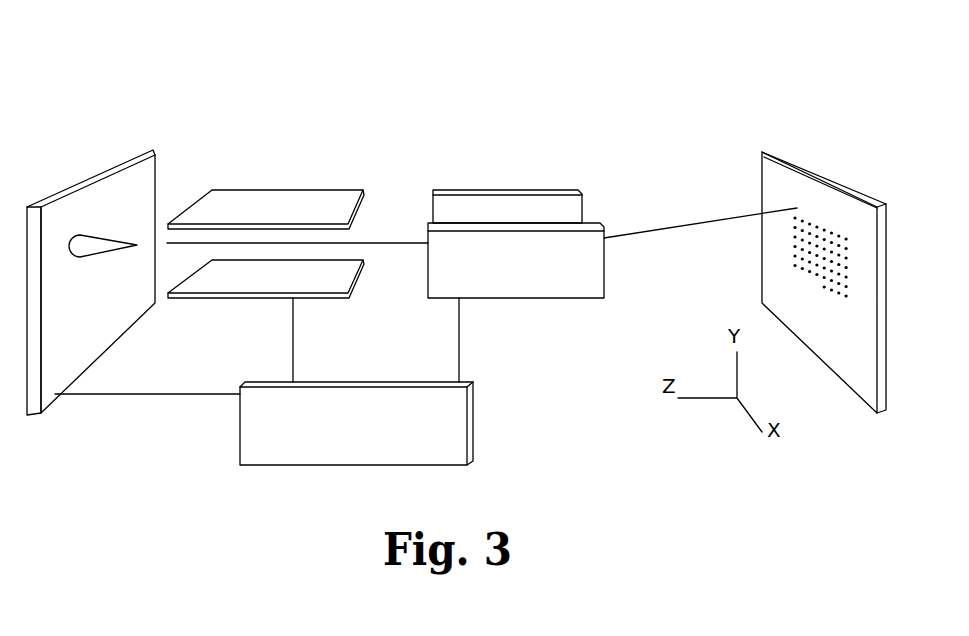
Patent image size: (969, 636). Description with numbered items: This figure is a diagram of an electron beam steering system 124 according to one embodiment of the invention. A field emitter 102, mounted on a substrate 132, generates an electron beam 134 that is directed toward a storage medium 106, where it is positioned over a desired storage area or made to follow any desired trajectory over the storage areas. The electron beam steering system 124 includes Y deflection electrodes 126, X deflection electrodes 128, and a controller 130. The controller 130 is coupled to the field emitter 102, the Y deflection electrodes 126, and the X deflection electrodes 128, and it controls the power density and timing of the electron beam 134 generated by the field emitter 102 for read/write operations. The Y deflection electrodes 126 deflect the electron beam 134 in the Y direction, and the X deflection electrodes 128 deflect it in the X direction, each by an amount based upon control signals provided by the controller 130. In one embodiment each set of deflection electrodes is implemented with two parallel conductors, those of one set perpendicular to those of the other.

The field emitter 102 is at (93, 243).
The storage medium 106 is at (785, 160).
The electron beam steering system 124 is at (262, 128).
The Y deflection electrodes 126 is at (210, 213).
The X deflection electrodes 128 is at (525, 210).
The controller 130 is at (238, 423).
The substrate 132 is at (97, 332).
The electron beam 134 is at (662, 229).